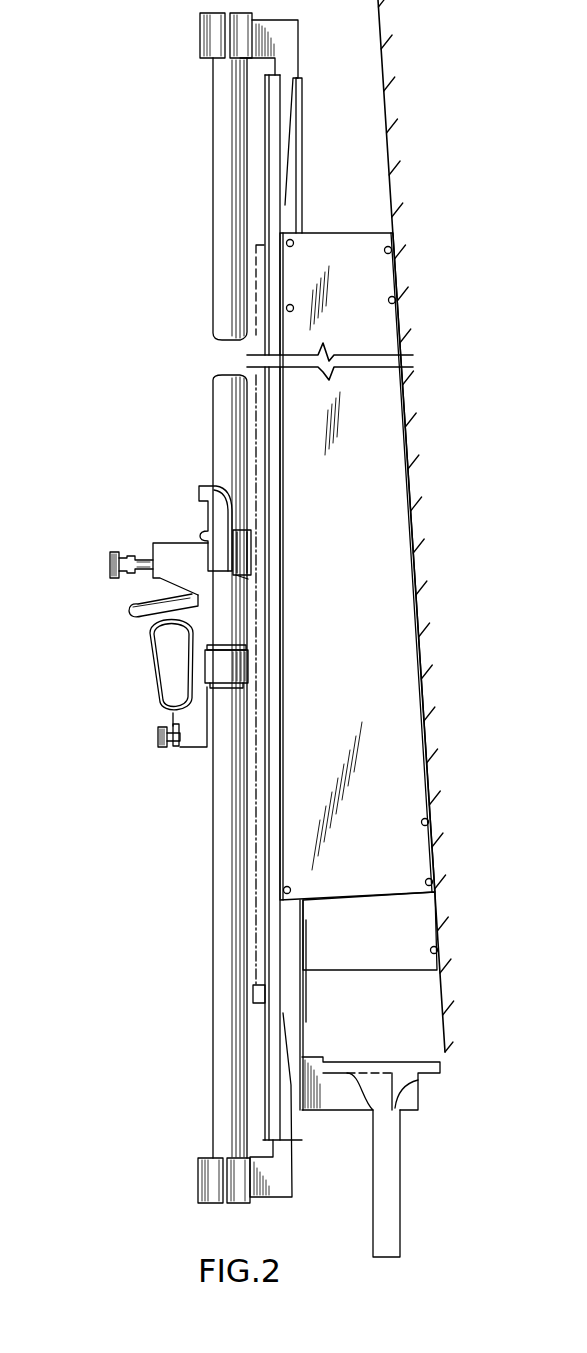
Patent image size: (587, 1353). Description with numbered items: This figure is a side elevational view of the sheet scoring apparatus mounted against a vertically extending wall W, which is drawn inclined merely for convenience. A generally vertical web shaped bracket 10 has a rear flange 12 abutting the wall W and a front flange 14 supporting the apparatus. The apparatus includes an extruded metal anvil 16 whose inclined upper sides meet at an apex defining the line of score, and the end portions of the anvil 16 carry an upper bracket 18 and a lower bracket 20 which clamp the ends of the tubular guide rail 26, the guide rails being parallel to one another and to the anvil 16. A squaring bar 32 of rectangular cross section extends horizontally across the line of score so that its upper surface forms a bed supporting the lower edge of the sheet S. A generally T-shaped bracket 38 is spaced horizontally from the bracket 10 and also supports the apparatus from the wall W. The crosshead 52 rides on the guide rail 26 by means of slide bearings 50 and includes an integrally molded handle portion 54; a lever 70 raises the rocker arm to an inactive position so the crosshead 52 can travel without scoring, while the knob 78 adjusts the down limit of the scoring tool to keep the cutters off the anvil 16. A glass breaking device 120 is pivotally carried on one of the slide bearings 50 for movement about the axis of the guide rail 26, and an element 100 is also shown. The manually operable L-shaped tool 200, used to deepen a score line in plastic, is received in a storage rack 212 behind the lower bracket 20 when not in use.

The web shaped bracket 10 is at (360, 629).
The rear flange 12 is at (408, 505).
The front flange 14 is at (285, 490).
The anvil 16 is at (303, 190).
The upper bracket 18 is at (283, 38).
The lower bracket 20 is at (258, 1199).
The tubular guide rail 26 is at (213, 224).
The squaring bar 32 is at (258, 983).
The T-shaped bracket 38 is at (369, 973).
The slide bearings 50 is at (248, 576).
The crosshead 52 is at (138, 590).
The handle portion 54 is at (150, 684).
The lever 70 is at (130, 614).
The knob 78 is at (157, 738).
The adjusting screw 100 is at (108, 560).
The glass breaking device 120 is at (190, 498).
The manually operable tool 200 is at (373, 1176).
The storage rack 212 is at (334, 1112).
The sheet S is at (240, 345).
The wall W is at (440, 1022).